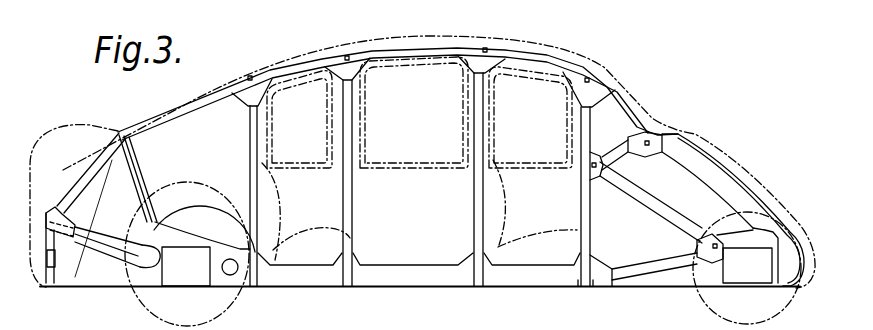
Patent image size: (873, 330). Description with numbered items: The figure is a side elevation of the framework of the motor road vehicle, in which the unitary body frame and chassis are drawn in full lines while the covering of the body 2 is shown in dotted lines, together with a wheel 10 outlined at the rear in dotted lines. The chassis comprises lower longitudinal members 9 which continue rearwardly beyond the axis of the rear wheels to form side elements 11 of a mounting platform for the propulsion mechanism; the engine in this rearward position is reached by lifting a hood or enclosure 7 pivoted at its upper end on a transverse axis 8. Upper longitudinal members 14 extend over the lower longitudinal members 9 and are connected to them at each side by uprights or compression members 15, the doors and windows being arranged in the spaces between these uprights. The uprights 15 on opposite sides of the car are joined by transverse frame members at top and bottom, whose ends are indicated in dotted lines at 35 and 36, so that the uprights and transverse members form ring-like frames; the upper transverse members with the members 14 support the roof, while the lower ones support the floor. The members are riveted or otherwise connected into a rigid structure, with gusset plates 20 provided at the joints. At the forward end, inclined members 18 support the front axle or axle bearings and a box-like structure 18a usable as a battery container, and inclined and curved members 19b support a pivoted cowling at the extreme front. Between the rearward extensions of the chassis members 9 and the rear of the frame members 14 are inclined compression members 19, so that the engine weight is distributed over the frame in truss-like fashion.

The body 2 is at (572, 64).
The hood or enclosure 7 is at (57, 135).
The transverse axis 8 is at (121, 132).
The lower longitudinal members 9 is at (433, 280).
The front wheel 10 is at (215, 308).
The side elements 11 is at (108, 284).
The upper longitudinal members 14 is at (400, 47).
The uprights or compression members 15 is at (250, 135).
The inclined members 18 is at (659, 209).
The box-like structure 18a is at (771, 275).
The inclined compression members 19 is at (147, 177).
The inclined and curved members 19b is at (727, 170).
The gusset plates 20 is at (254, 76).
The end of upper transverse member 35 is at (592, 80).
The end of lower transverse member 36 is at (584, 288).